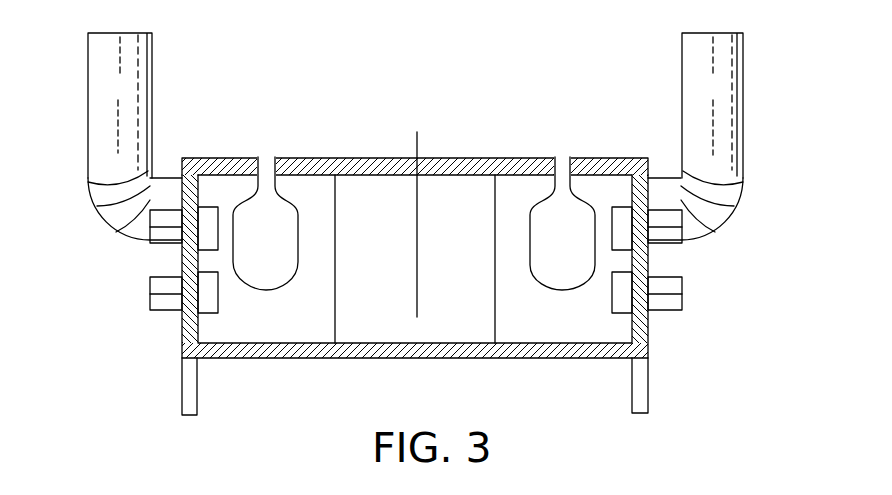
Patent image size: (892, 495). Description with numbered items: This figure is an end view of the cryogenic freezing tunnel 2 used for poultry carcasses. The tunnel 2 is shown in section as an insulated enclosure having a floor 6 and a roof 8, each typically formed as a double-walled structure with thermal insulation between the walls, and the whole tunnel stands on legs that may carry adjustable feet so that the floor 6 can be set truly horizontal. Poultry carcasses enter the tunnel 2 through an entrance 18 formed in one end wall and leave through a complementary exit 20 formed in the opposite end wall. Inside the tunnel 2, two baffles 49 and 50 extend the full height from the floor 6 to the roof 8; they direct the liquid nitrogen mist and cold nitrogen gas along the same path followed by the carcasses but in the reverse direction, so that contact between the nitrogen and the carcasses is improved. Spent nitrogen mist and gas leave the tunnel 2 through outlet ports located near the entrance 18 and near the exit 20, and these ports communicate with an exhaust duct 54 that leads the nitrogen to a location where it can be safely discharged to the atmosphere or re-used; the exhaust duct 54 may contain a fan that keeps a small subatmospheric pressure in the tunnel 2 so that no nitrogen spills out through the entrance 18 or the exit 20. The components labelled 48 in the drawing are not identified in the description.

The tunnel 2 is at (140, 337).
The floor 6 is at (555, 358).
The roof 8 is at (372, 170).
The entrance 18 is at (266, 290).
The exit 20 is at (562, 290).
The pipe connection ports 48 is at (150, 298).
The baffle 49 is at (495, 324).
The baffle 50 is at (335, 326).
The exhaust duct 54 is at (88, 96).